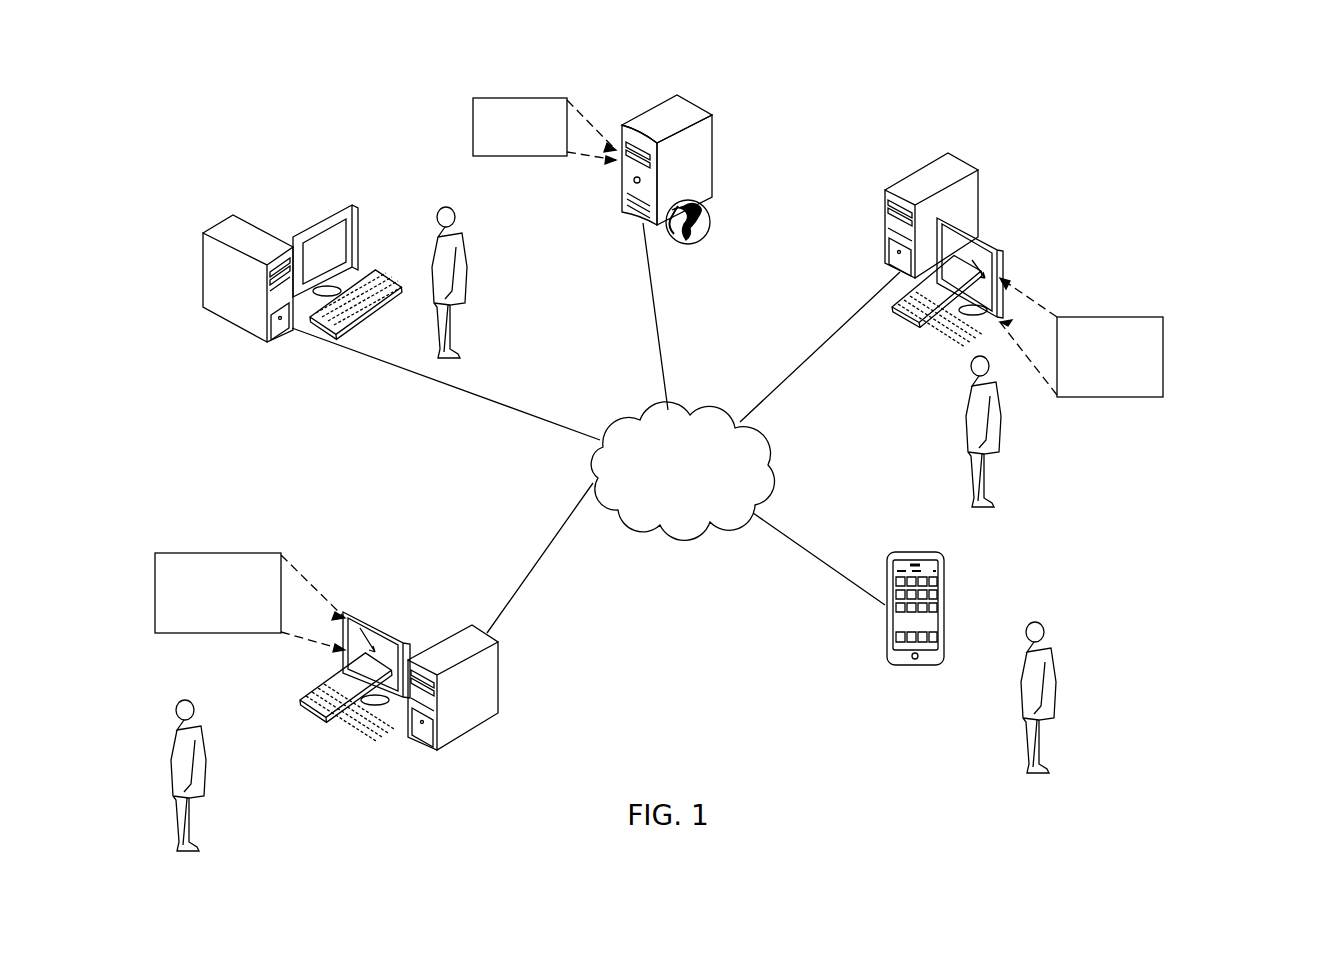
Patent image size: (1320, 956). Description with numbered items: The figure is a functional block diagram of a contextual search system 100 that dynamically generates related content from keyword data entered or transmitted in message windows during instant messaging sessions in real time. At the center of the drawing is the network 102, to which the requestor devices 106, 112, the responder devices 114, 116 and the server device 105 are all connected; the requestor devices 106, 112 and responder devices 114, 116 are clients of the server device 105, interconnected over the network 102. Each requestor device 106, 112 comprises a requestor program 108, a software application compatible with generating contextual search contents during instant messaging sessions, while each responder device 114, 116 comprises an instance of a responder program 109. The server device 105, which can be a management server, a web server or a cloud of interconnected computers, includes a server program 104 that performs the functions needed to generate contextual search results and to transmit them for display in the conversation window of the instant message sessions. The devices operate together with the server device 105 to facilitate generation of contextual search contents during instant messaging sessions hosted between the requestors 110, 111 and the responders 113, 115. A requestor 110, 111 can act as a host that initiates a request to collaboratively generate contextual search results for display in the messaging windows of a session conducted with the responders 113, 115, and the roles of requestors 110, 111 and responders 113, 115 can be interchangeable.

The contextual search system 100 is at (1160, 115).
The network 102 is at (716, 411).
The server program 104 is at (473, 120).
The server device 105 is at (712, 140).
The requestor device 106 is at (948, 158).
The requestor program 108 is at (1063, 317).
The responder program 109 is at (211, 553).
The requestor 110 is at (972, 384).
The requestor 111 is at (1052, 636).
The requestor device 112 is at (887, 650).
The responder 113 is at (198, 744).
The responder device 114 is at (460, 718).
The responder 115 is at (438, 236).
The responder device 116 is at (220, 226).